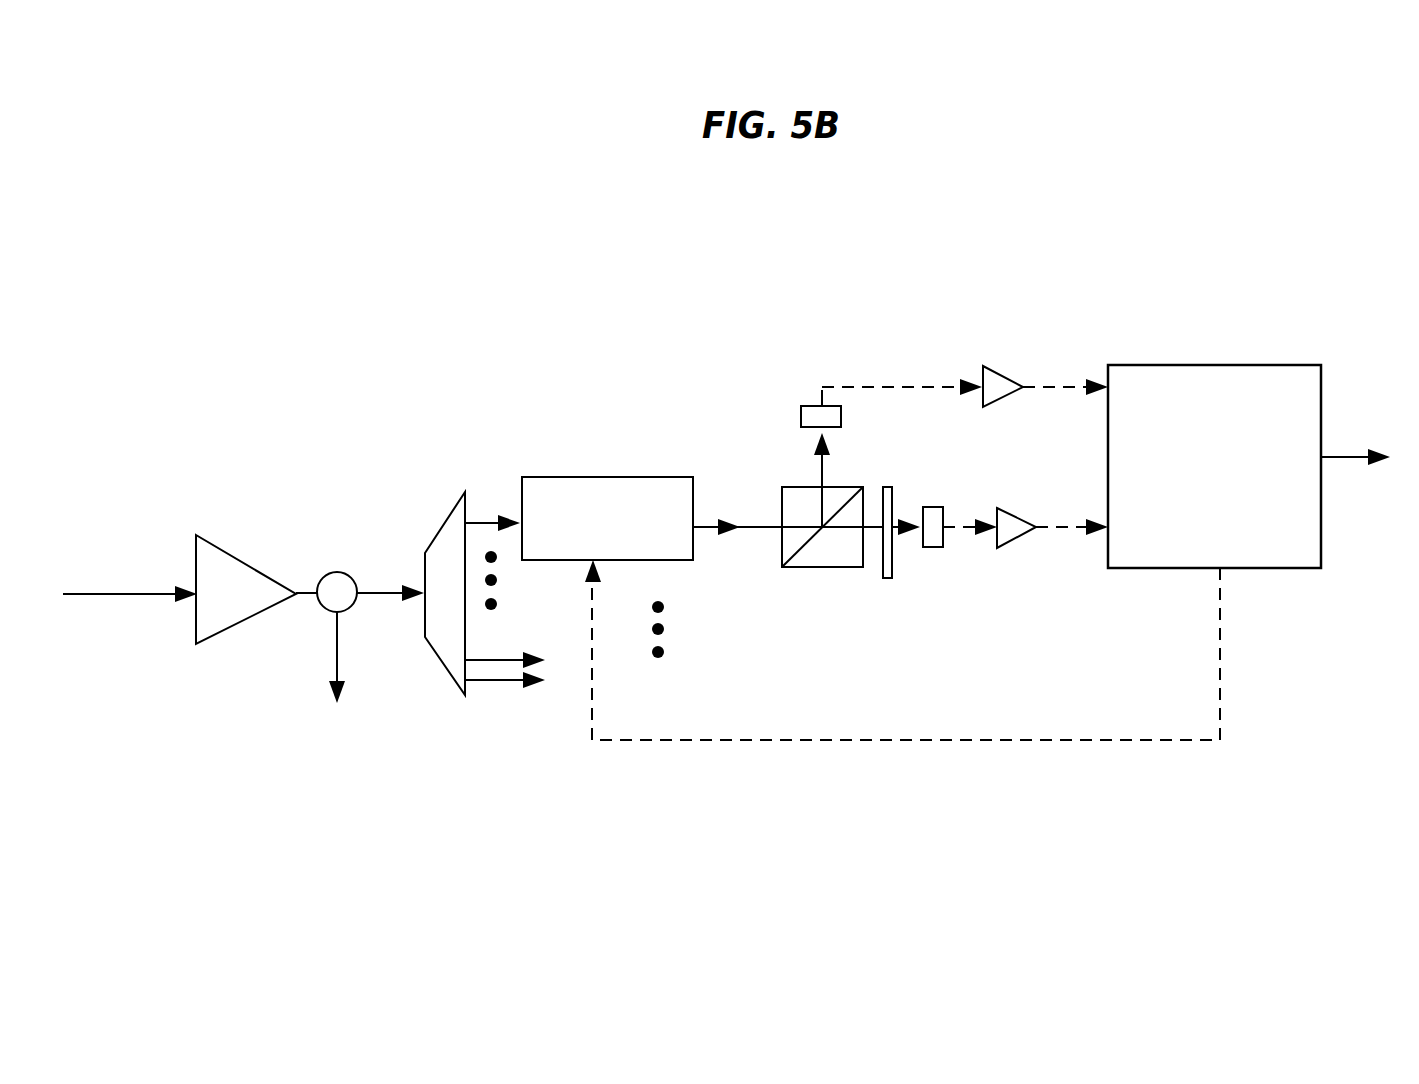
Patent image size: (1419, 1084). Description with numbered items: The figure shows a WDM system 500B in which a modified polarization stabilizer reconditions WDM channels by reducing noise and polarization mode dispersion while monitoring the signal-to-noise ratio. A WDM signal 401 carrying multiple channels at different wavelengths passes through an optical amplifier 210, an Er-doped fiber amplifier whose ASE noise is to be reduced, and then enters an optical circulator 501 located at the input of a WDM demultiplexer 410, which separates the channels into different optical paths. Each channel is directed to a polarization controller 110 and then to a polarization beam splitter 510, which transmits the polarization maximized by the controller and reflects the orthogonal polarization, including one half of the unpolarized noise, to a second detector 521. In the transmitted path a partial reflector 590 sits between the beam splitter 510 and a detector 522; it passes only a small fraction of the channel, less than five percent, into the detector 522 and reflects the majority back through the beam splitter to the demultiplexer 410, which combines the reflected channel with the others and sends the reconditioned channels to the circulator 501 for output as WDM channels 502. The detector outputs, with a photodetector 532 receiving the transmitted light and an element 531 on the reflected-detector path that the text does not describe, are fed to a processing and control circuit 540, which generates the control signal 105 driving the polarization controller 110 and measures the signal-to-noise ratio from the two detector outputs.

The WDM system 500B is at (620, 345).
The WDM signal 401 is at (135, 594).
The optical amplifier 210 is at (221, 553).
The optical circulator 501 is at (340, 574).
The WDM channels 502 is at (335, 655).
The WDM demultiplexer 410 is at (455, 518).
The polarization controller 110 is at (622, 477).
The polarization beam splitter (PBS) 510 is at (822, 567).
The partial reflector 590 is at (888, 578).
The second detector 521 is at (801, 417).
The detector 522 is at (932, 507).
The first amplifier 531 is at (992, 368).
The photodetector 532 is at (1017, 548).
The processing and control circuit 540 is at (1193, 545).
The control signal 105 is at (895, 740).